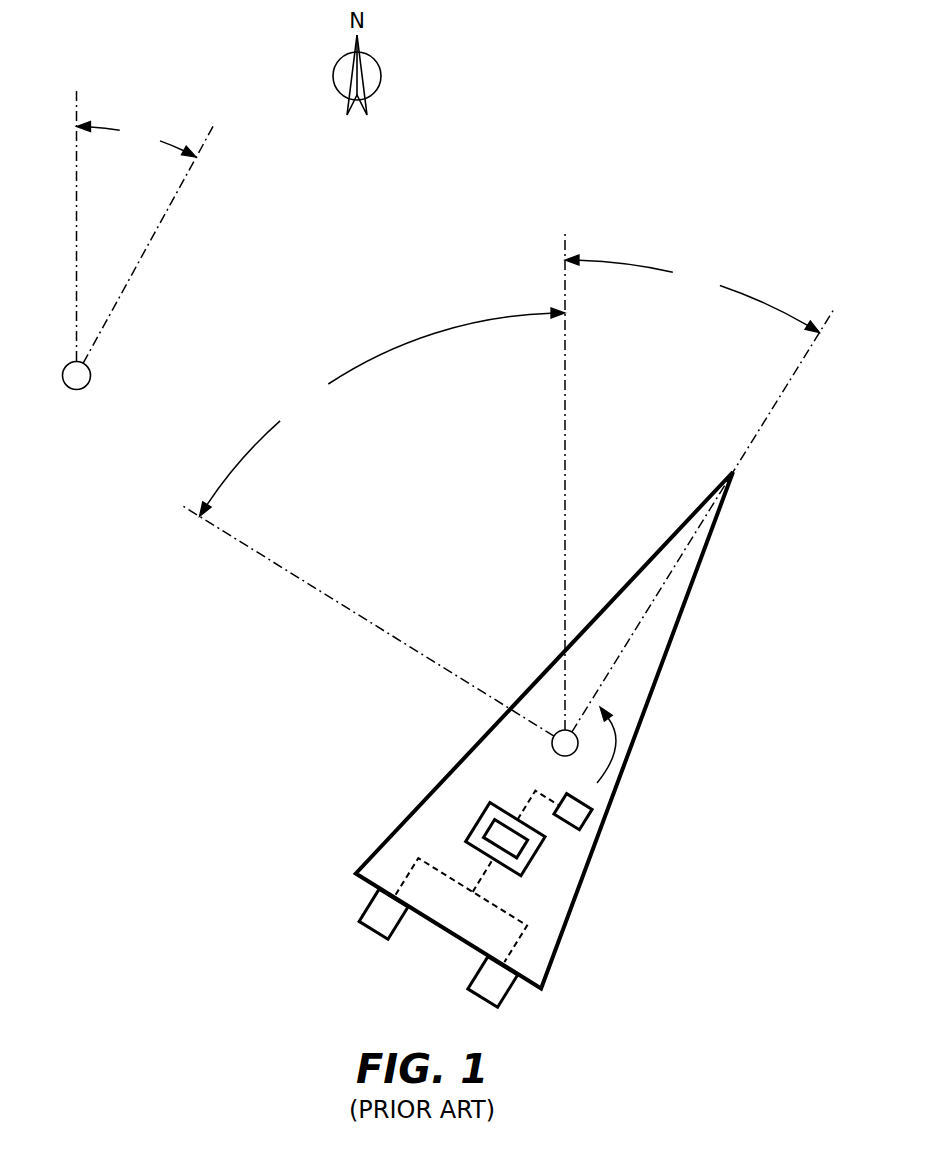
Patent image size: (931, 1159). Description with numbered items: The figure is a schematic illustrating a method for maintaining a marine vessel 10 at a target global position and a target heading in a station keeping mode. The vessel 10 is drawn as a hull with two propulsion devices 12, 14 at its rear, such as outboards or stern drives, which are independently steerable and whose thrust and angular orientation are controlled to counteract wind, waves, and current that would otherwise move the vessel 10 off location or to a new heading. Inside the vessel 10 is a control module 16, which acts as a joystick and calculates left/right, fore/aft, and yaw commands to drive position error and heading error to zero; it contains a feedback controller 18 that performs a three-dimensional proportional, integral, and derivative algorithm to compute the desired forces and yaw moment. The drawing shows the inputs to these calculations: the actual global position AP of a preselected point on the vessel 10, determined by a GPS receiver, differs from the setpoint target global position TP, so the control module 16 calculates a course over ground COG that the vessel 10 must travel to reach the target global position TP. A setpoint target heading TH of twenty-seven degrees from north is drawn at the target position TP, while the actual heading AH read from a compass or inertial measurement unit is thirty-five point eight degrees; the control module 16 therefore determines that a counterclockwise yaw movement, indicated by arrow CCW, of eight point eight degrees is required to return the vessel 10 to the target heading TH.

The marine vessel 10 is at (658, 673).
The propulsion device 12 is at (367, 909).
The propulsion device 14 is at (472, 978).
The control module 16 is at (530, 860).
The feedback controller 18 is at (490, 827).
The actual global position AP is at (553, 752).
The target global position TP is at (86, 389).
The course over ground COG is at (372, 522).
The actual heading AH is at (699, 493).
The target heading TH is at (137, 135).
The counterclockwise yaw movement CCW is at (610, 731).